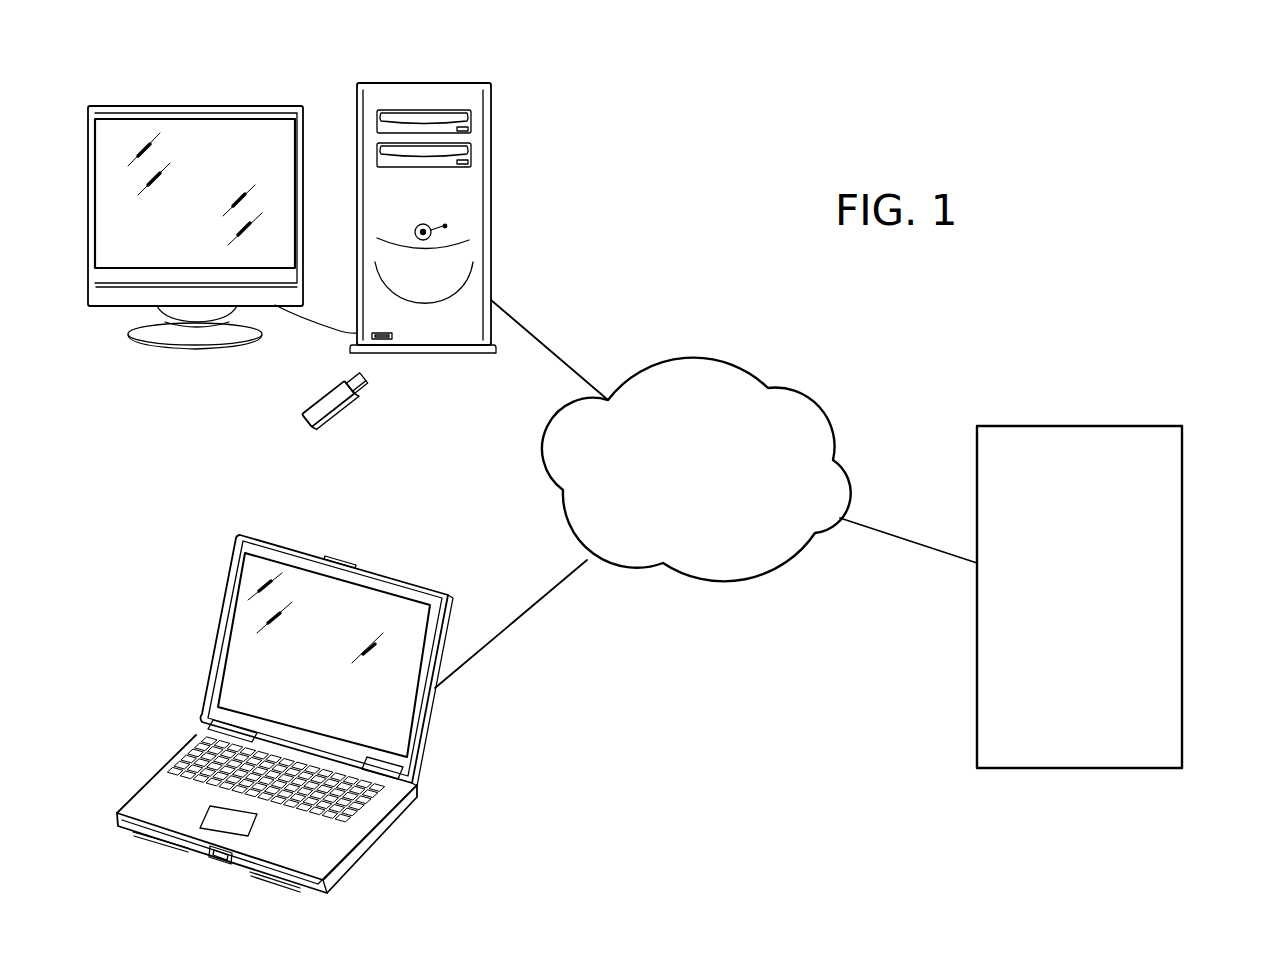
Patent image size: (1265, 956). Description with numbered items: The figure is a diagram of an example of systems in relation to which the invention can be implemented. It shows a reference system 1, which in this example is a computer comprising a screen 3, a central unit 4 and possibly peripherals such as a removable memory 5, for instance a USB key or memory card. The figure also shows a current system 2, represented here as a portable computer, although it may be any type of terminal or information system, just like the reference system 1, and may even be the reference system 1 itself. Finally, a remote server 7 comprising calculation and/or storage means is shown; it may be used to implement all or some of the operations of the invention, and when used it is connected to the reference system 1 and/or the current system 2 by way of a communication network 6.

The reference system 1 is at (123, 82).
The current system 2 is at (176, 607).
The screen 3 is at (106, 297).
The central unit 4 is at (493, 107).
The removable memory 5 is at (347, 387).
The communication network 6 is at (729, 375).
The remote server 7 is at (1183, 471).